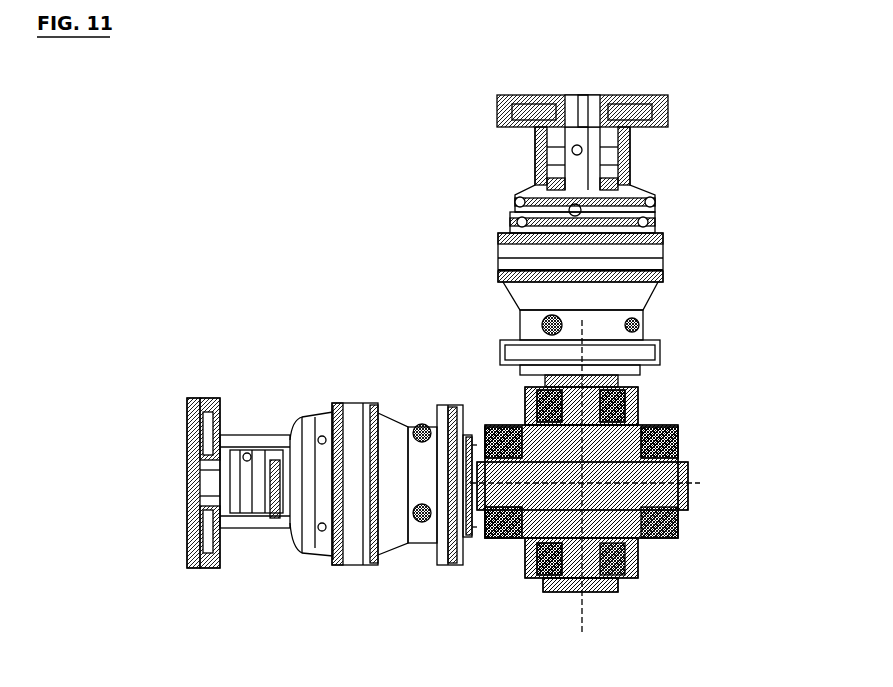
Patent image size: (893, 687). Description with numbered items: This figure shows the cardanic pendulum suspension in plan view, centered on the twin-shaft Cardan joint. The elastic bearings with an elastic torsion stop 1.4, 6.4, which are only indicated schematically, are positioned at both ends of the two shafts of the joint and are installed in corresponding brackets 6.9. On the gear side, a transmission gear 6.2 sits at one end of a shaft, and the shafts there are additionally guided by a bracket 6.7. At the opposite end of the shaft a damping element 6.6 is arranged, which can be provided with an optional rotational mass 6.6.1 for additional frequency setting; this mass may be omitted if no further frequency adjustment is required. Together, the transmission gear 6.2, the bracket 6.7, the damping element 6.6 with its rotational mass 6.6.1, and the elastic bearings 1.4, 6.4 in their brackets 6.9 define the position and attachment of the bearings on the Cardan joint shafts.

The transmission gear 6.2 is at (343, 406).
The damping element 6.6 is at (648, 118).
The rotational mass 6.6.1 is at (214, 398).
The bracket 6.7 is at (642, 400).
The elastic bearing with elastic torsion stop 1.4 is at (688, 513).
The elastic torsion stop 6.4 is at (666, 489).
The bracket 6.9 is at (672, 515).